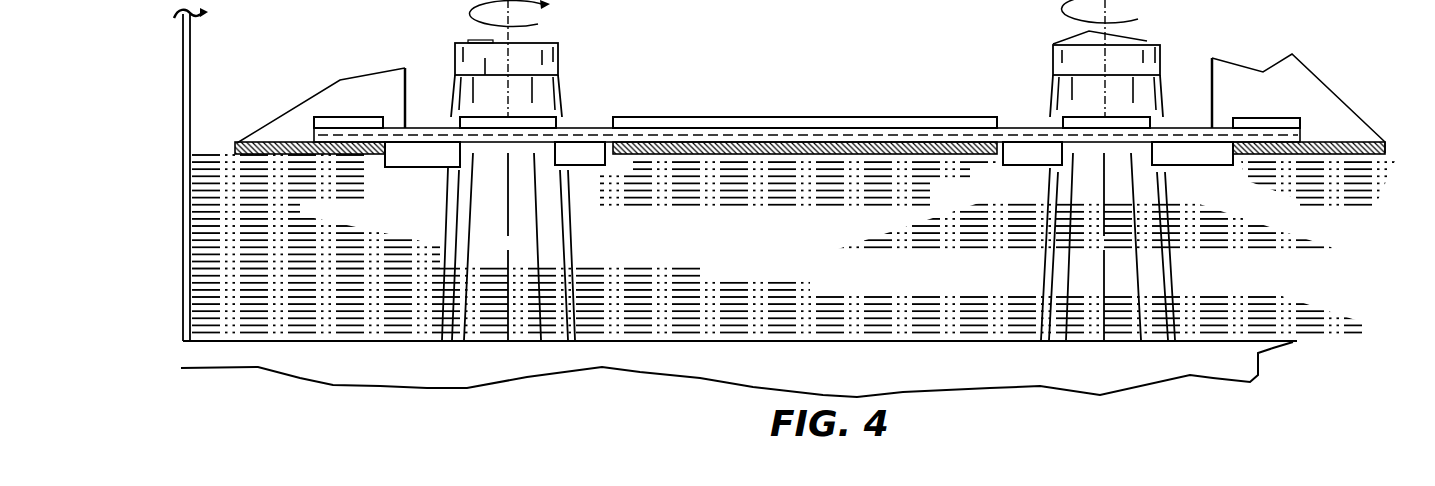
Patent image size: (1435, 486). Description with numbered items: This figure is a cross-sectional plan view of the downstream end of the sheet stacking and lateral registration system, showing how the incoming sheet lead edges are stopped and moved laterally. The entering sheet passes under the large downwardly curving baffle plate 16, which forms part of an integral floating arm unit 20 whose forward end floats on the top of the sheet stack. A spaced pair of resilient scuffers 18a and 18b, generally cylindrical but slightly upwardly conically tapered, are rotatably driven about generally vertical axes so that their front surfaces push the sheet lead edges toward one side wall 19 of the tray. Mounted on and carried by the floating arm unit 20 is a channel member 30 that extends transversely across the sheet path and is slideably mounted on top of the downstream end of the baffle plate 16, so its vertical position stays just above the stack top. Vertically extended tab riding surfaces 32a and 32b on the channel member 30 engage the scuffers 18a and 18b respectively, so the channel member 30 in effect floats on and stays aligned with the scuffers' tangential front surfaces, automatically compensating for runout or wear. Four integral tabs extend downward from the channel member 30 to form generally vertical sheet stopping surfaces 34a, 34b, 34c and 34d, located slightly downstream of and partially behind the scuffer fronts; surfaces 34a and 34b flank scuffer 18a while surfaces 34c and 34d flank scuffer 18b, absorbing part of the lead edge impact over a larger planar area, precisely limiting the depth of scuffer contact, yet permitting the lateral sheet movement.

The baffle plate 16 is at (788, 142).
The scuffer 18a is at (1087, 63).
The scuffer 18b is at (465, 67).
The side wall 19 is at (183, 107).
The integral floating arm unit 20 is at (702, 90).
The channel member 30 is at (852, 123).
The tab riding surface 32a is at (1103, 122).
The tab riding surface 32b is at (527, 122).
The sheet stopping surface 34a is at (1183, 153).
The sheet stopping surface 34b is at (1033, 153).
The sheet stopping surface 34c is at (582, 150).
The sheet stopping surface 34d is at (437, 152).